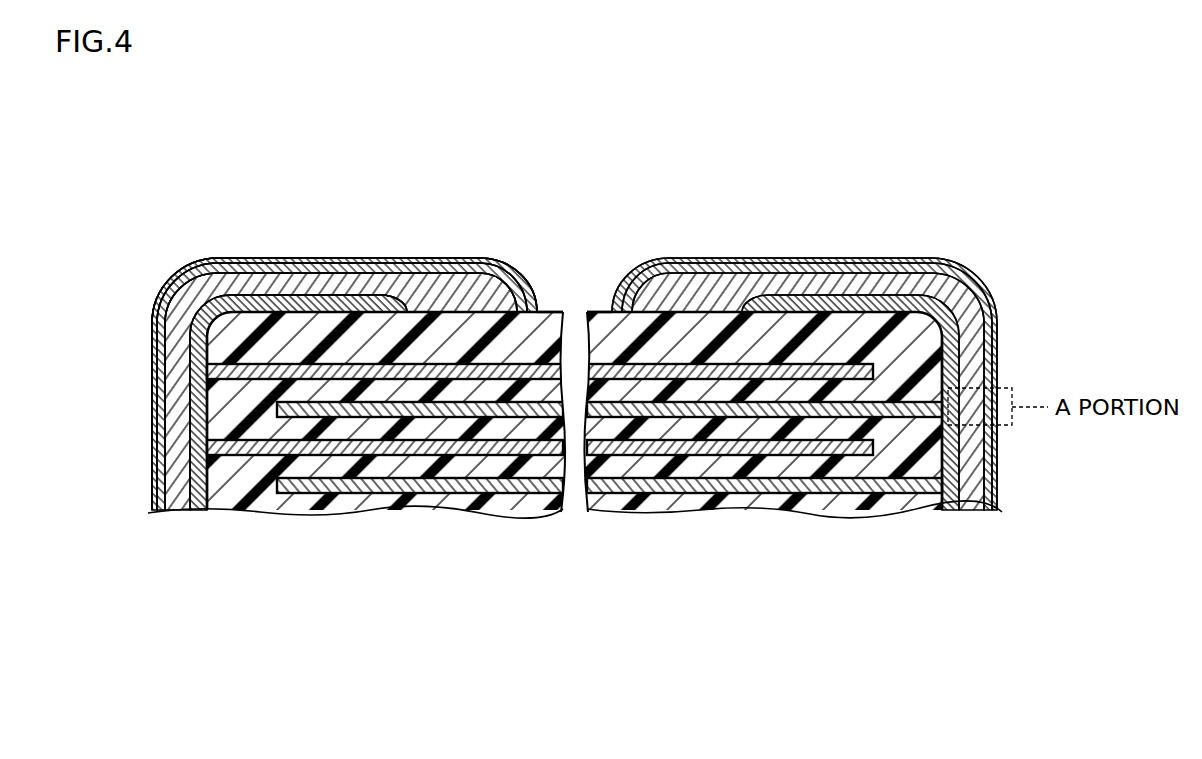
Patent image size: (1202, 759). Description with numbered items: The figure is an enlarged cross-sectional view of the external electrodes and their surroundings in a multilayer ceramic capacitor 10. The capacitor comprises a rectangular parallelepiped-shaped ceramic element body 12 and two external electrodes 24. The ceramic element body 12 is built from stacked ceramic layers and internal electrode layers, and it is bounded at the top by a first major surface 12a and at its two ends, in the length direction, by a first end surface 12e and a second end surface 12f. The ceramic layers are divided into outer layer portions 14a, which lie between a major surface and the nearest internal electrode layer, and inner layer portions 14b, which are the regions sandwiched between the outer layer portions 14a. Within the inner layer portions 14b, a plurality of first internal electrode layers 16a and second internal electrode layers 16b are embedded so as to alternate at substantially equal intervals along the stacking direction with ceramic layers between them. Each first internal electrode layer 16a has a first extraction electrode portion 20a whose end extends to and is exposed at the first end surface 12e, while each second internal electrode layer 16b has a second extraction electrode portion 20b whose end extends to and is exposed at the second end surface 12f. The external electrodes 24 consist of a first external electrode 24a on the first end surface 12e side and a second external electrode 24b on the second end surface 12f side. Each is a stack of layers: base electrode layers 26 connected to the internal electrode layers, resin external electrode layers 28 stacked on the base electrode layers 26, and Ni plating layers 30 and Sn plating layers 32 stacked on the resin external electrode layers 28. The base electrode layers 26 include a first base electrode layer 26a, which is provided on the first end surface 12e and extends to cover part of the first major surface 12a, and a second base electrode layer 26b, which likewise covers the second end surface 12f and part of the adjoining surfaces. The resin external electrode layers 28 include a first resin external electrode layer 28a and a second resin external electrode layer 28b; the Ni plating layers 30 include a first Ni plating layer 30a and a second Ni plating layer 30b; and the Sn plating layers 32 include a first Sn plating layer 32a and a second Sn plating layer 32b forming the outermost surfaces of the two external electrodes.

The multilayer ceramic capacitor 10 is at (184, 171).
The ceramic element body 12 is at (563, 304).
The first major surface 12a is at (530, 310).
The first end surface 12e is at (205, 434).
The second end surface 12f is at (945, 468).
The outer layer portion 14a is at (545, 345).
The inner layer portion 14b is at (305, 390).
The first internal electrode layer 16a is at (470, 368).
The second internal electrode layer 16b is at (398, 410).
The first extraction electrode portion 20a is at (214, 366).
The second extraction electrode portion 20b is at (933, 408).
The external electrodes 24 is at (258, 622).
The first external electrode 24a is at (293, 252).
The second external electrode 24b is at (823, 252).
The base electrode layers 26 is at (415, 622).
The first base electrode layer 26a is at (368, 303).
The second base electrode layer 26b is at (785, 303).
The resin external electrode layers 28 is at (572, 622).
The first resin external electrode layer 28a is at (443, 303).
The second resin external electrode layer 28b is at (728, 303).
The Ni plating layers 30 is at (729, 622).
The first Ni plating layer 30a is at (333, 270).
The second Ni plating layer 30b is at (942, 270).
The Sn plating layers 32 is at (886, 622).
The first Sn plating layer 32a is at (243, 261).
The second Sn plating layer 32b is at (893, 261).